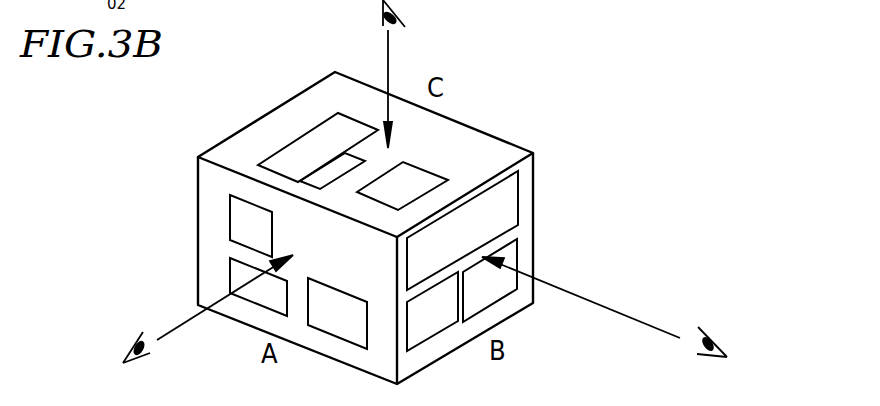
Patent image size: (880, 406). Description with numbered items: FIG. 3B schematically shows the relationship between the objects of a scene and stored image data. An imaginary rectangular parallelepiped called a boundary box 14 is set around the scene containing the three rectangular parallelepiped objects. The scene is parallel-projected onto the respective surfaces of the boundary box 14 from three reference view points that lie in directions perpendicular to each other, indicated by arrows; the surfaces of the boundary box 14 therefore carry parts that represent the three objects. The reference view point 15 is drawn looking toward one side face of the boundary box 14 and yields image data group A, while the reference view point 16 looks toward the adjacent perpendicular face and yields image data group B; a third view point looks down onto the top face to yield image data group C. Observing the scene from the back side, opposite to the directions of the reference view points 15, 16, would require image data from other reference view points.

The boundary box 14 is at (535, 202).
The reference view point 15 is at (192, 323).
The reference view point 16 is at (620, 315).